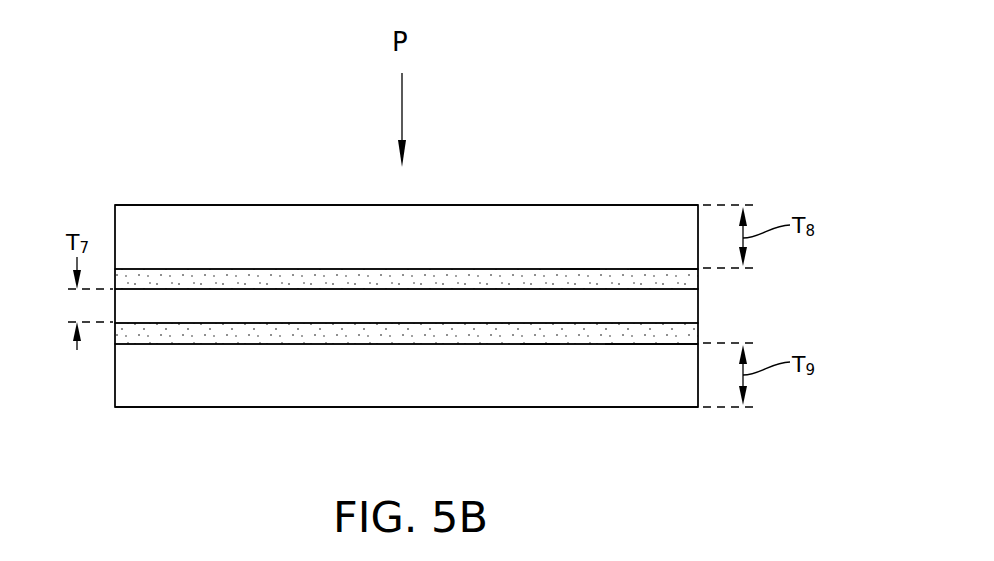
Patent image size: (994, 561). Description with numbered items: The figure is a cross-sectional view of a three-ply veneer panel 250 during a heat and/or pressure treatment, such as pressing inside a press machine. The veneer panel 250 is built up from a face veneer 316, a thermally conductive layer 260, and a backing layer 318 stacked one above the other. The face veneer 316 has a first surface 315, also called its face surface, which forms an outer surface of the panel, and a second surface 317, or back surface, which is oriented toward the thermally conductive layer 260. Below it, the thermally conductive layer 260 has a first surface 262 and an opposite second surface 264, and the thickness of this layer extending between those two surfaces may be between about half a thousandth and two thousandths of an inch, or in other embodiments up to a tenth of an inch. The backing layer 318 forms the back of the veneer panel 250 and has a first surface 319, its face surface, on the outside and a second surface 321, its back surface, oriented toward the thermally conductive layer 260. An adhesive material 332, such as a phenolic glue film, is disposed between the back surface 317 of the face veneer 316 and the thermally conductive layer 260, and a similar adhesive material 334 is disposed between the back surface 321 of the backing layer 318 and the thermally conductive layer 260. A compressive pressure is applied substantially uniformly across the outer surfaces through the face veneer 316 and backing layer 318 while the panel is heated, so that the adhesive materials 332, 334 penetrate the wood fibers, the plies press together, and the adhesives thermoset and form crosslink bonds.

The veneer panel 250 is at (630, 142).
The thermally conductive layer 260 is at (424, 316).
The first surface 262 is at (278, 288).
The second surface 264 is at (245, 325).
The first surface 315 is at (198, 205).
The face veneer 316 is at (424, 243).
The second surface 317 is at (637, 270).
The backing layer 318 is at (424, 388).
The first surface 319 is at (185, 407).
The second surface 321 is at (612, 342).
The adhesive material 332 is at (583, 283).
The adhesive material 334 is at (538, 332).